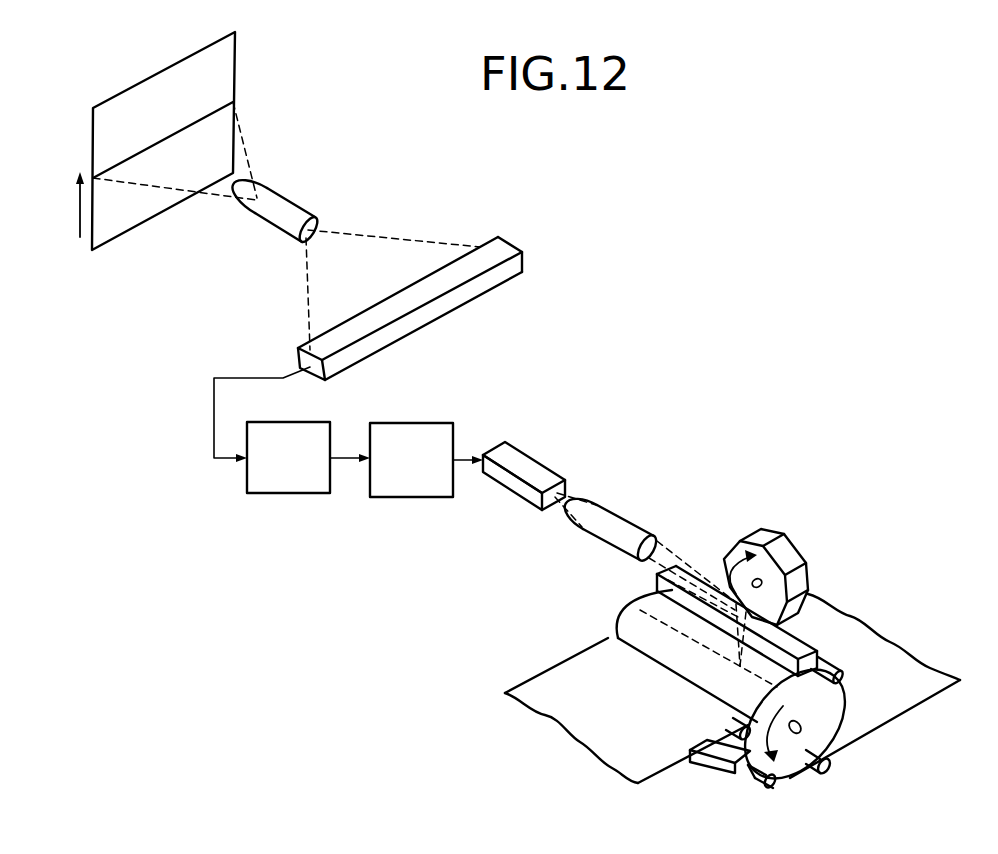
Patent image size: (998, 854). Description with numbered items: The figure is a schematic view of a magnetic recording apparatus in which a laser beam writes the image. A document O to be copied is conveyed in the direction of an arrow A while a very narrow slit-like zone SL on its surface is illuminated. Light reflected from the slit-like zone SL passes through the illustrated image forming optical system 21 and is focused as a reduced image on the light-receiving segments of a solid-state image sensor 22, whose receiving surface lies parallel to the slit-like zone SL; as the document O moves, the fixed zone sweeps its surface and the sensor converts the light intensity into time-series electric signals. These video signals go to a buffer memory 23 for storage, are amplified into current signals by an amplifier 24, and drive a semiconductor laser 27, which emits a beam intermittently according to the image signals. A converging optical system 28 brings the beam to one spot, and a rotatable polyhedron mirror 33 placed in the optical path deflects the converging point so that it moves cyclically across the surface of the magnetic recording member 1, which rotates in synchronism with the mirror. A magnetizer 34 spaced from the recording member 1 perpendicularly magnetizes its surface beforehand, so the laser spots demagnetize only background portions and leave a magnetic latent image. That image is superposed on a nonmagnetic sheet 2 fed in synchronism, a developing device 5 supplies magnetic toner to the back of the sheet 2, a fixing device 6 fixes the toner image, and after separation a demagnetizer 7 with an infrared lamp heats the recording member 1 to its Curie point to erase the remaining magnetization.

The magnetic recording member 1 is at (623, 623).
The nonmagnetic sheet 2 is at (550, 670).
The developing device 5 is at (710, 753).
The fixing device 6 is at (756, 782).
The demagnetizer 7 is at (844, 671).
The imaging lens 21 is at (293, 207).
The solid-state image sensor 22 is at (435, 322).
The buffer memory 23 is at (315, 422).
The amplifier 24 is at (413, 423).
The semiconductor laser 27 is at (538, 462).
The converging optical system 28 is at (630, 516).
The rotatable polyhedron mirror 33 is at (795, 547).
The magnetizer 34 is at (798, 635).
The document O is at (150, 75).
The slit-like zone SL is at (175, 135).
The arrow A is at (79, 193).